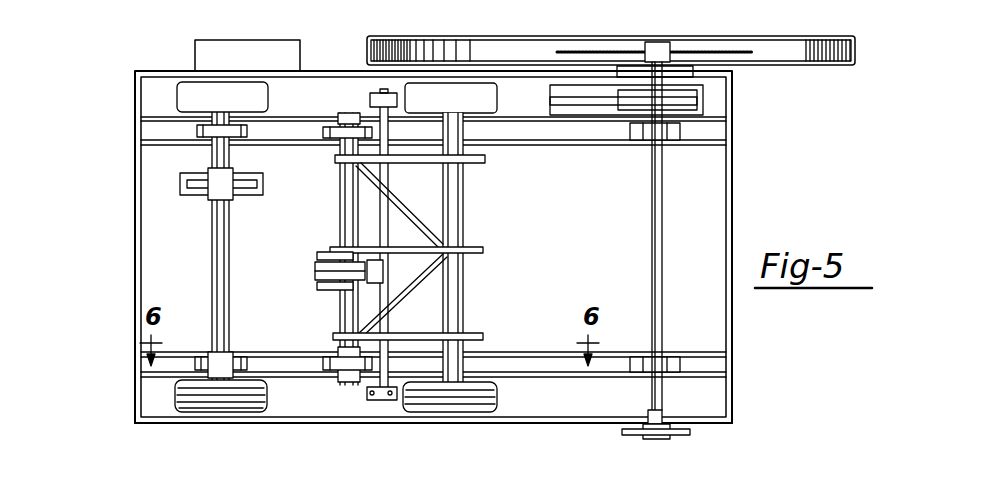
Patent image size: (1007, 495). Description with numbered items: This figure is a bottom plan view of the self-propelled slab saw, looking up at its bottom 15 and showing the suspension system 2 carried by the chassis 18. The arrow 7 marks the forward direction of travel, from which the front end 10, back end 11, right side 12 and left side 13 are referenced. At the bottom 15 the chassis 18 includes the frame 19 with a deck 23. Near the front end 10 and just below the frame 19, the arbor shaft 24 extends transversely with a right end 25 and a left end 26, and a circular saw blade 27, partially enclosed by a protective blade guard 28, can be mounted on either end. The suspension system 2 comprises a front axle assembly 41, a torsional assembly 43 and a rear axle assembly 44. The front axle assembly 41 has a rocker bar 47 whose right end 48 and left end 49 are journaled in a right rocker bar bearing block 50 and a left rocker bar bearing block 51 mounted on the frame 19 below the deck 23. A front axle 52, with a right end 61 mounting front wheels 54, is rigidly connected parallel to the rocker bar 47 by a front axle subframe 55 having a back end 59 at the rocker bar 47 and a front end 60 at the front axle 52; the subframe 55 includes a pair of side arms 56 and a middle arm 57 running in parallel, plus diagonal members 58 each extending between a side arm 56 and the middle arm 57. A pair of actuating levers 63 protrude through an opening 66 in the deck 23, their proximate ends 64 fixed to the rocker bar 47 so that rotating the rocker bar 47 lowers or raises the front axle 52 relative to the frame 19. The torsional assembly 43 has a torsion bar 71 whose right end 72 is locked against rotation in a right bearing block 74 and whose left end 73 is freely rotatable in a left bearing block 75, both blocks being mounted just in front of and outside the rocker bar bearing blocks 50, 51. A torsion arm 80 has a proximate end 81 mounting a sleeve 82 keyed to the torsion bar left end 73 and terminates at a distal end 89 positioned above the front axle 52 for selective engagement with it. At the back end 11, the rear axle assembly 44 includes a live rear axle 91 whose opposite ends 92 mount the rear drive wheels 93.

The suspension system 2 is at (541, 189).
The arrow 7 is at (862, 190).
The front end 10 is at (732, 340).
The back end 11 is at (134, 283).
The right side 12 is at (336, 70).
The left side 13 is at (304, 423).
The bottom 15 is at (610, 233).
The chassis 18 is at (732, 419).
The frame 19 is at (137, 425).
The deck 23 is at (600, 275).
The arbor shaft 24 is at (660, 230).
The right end 25 is at (673, 70).
The left end 26 is at (657, 383).
The circular saw blade 27 is at (557, 52).
The blade guard 28 is at (868, 27).
The front axle assembly 41 is at (490, 152).
The torsional assembly 43 is at (364, 386).
The rear axle assembly 44 is at (205, 340).
The rocker bar 47 is at (340, 225).
The right end 48 is at (347, 112).
The left end 49 is at (337, 378).
The right rocker bar bearing block 50 is at (327, 133).
The left rocker bar bearing block 51 is at (318, 360).
The front axle 52 is at (463, 213).
The front wheels 54 is at (500, 385).
The front axle subframe 55 is at (480, 335).
The side arms 56 is at (395, 152).
The middle arm 57 is at (416, 240).
The diagonal members 58 is at (405, 175).
The back end 59 is at (340, 160).
The front end 60 is at (483, 250).
The right end 61 is at (468, 129).
The actuating levers 63 is at (323, 292).
The proximate ends 64 is at (368, 283).
The opening 66 is at (316, 270).
The torsion bar 71 is at (378, 200).
The right end 72 is at (382, 93).
The left end 73 is at (387, 401).
The right bearing block 74 is at (403, 104).
The left bearing block 75 is at (368, 400).
The torsion arm 80 is at (433, 367).
The proximate end 81 is at (380, 357).
The sleeve 82 is at (365, 352).
The distal end 89 is at (450, 365).
The rear axle 91 is at (210, 244).
The opposite ends 92 is at (210, 150).
The rear drive wheels 93 is at (175, 392).